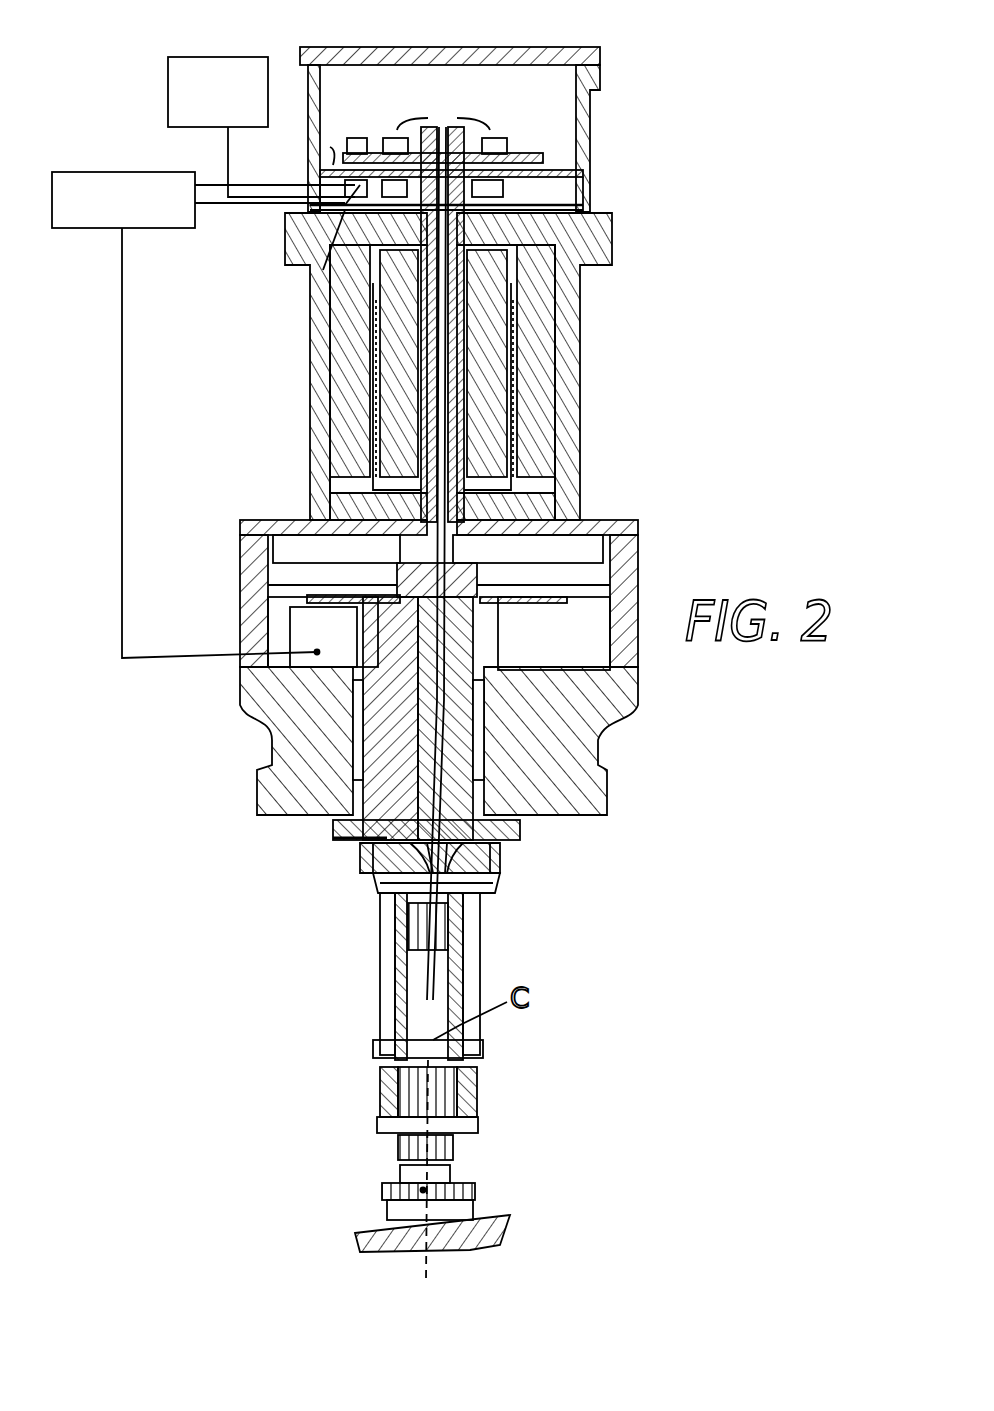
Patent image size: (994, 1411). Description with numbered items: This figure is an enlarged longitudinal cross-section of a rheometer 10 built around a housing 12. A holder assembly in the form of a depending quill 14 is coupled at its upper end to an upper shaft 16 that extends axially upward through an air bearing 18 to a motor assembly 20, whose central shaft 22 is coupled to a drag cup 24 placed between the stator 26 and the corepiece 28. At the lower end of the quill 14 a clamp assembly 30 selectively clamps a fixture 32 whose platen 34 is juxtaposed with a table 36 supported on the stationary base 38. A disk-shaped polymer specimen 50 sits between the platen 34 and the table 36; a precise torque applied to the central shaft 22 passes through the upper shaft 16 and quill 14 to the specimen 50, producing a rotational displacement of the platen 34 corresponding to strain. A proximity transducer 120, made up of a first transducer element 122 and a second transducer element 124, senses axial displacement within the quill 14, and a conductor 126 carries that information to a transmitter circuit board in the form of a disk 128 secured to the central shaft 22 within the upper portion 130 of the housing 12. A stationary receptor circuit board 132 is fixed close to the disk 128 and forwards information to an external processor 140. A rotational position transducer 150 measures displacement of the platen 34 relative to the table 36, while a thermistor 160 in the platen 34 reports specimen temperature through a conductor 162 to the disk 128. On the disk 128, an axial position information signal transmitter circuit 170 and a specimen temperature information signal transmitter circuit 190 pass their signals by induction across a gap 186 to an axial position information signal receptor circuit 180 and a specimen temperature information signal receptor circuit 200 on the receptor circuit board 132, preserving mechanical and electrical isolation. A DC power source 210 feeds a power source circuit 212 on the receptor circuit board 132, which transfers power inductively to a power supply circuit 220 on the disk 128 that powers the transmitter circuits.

The rheometer 10 is at (642, 522).
The housing 12 is at (580, 328).
The quill 14 is at (373, 1002).
The upper shaft 16 is at (357, 850).
The air bearing 18 is at (508, 802).
The motor assembly 20 is at (560, 378).
The central shaft 22 is at (460, 418).
The drag cup 24 is at (470, 448).
The stator 26 is at (338, 337).
The corepiece 28 is at (397, 370).
The clamp assembly 30 is at (486, 1078).
The fixture 32 is at (470, 1122).
The platen 34 is at (473, 1178).
The table 36 is at (477, 1207).
The stationary base 38 is at (490, 1217).
The specimen 50 is at (387, 1208).
The proximity transducer 120 is at (410, 903).
The first transducer element 122 is at (383, 893).
The second transducer element 124 is at (383, 940).
The conductor 126 is at (488, 138).
The disk 128 is at (583, 153).
The upper portion 130 is at (592, 118).
The receptor circuit board 132 is at (583, 165).
The processor 140 is at (105, 142).
The transducer 150 is at (287, 605).
The thermistor 160 is at (423, 1190).
The conductor 162 is at (425, 118).
The axial position information signal transmitter circuit 170 is at (505, 140).
The axial position information signal receptor circuit 180 is at (510, 190).
The gap 186 is at (330, 147).
The specimen temperature information signal transmitter circuit 190 is at (390, 138).
The specimen temperature information signal receptor circuit 200 is at (323, 270).
The DC power source 210 is at (168, 84).
The power source circuit 212 is at (345, 205).
The power supply circuit 220 is at (355, 138).